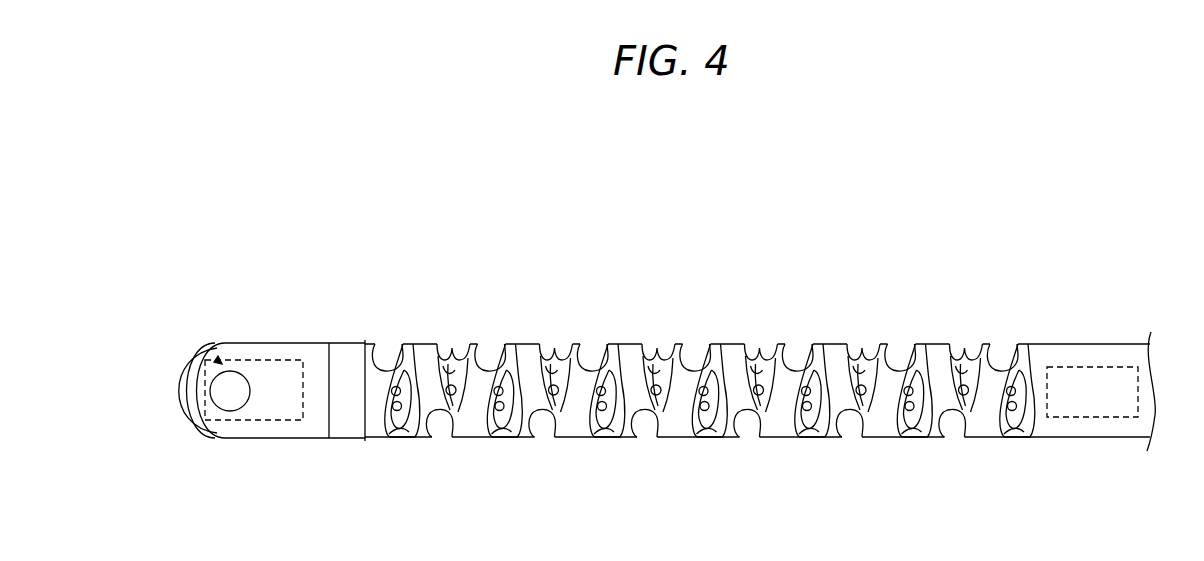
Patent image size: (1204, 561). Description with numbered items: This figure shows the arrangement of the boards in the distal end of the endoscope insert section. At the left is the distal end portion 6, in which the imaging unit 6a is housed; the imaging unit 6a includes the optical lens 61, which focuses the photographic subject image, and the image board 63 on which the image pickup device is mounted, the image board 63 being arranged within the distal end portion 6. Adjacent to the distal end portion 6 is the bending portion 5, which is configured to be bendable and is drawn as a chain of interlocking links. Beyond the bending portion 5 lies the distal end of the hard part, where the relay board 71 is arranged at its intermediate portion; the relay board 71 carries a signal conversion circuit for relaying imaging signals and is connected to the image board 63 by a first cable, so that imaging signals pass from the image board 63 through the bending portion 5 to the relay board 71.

The bending portion 5 is at (687, 345).
The distal end portion 6 is at (307, 342).
The imaging unit 6a is at (219, 358).
The optical lens 61 is at (231, 404).
The image board 63 is at (260, 360).
The relay board 71 is at (1090, 367).